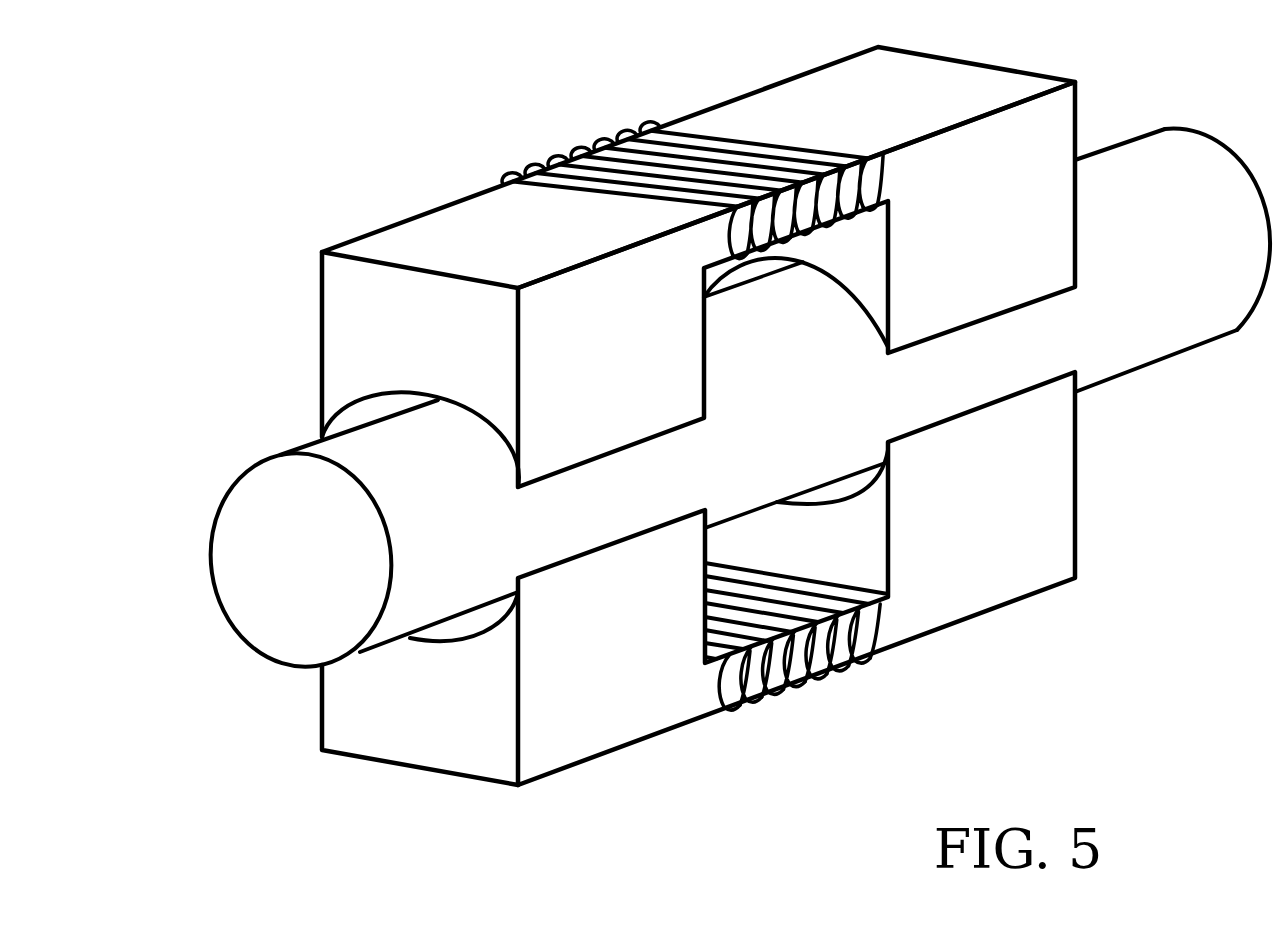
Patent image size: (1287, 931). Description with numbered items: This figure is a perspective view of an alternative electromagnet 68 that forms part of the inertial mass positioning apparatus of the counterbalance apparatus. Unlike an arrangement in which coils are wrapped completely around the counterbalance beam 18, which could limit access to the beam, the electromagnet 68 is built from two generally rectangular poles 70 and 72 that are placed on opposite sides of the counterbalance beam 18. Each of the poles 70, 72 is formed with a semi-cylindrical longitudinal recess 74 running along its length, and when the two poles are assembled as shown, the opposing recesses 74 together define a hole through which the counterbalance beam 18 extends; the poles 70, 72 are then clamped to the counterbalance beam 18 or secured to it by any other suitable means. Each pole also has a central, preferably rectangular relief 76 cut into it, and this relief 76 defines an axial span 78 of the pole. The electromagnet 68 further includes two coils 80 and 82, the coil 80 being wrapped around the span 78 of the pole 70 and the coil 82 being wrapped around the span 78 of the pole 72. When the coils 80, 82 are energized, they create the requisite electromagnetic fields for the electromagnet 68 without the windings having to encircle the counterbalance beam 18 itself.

The counterbalance beam 18 is at (1193, 137).
The electromagnet 68 is at (389, 199).
The pole 70 is at (1000, 78).
The pole 72 is at (1017, 606).
The semi-cylindrical longitudinal recess 74 is at (362, 411).
The central relief 76 is at (858, 283).
The axial span 78 is at (722, 244).
The coil 80 is at (622, 128).
The coil 82 is at (820, 684).